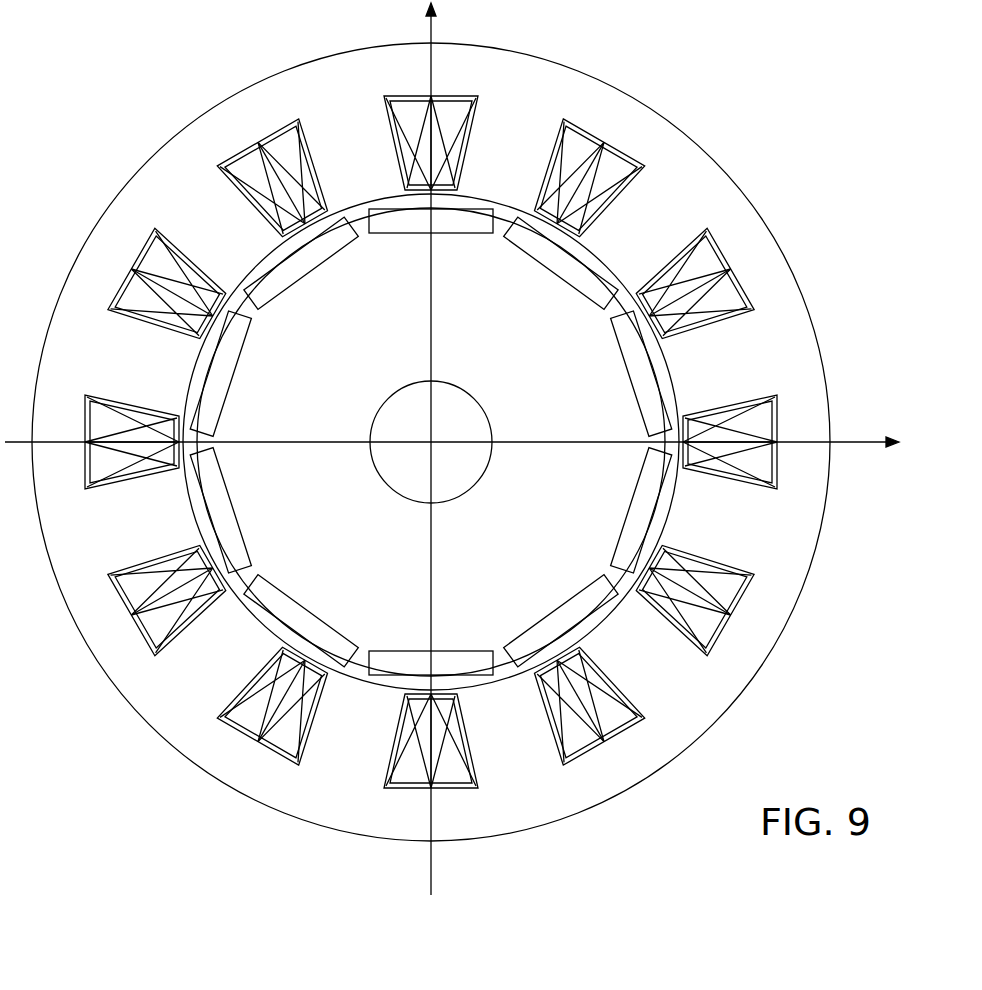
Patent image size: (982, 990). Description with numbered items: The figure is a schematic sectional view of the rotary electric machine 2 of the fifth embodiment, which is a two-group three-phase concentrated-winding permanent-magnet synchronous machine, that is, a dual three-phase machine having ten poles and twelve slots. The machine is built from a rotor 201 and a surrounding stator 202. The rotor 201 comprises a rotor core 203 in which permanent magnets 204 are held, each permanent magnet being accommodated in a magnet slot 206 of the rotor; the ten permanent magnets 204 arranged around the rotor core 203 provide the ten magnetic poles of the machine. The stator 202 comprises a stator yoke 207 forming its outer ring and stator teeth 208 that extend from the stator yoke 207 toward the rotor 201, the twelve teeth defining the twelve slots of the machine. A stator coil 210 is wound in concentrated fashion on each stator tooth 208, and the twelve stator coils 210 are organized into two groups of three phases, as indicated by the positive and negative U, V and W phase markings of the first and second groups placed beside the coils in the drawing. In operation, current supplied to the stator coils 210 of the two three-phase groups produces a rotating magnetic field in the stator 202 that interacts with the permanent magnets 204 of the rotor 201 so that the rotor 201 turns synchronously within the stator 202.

The rotary electric machine 2 is at (143, 60).
The rotor 201 is at (280, 248).
The stator 202 is at (170, 140).
The rotor core 203 is at (365, 240).
The permanent magnets 204 is at (642, 368).
The magnet slot 206 is at (457, 465).
The stator yoke 207 is at (460, 57).
The stator teeth 208 is at (507, 128).
The stator coil 210 is at (607, 167).